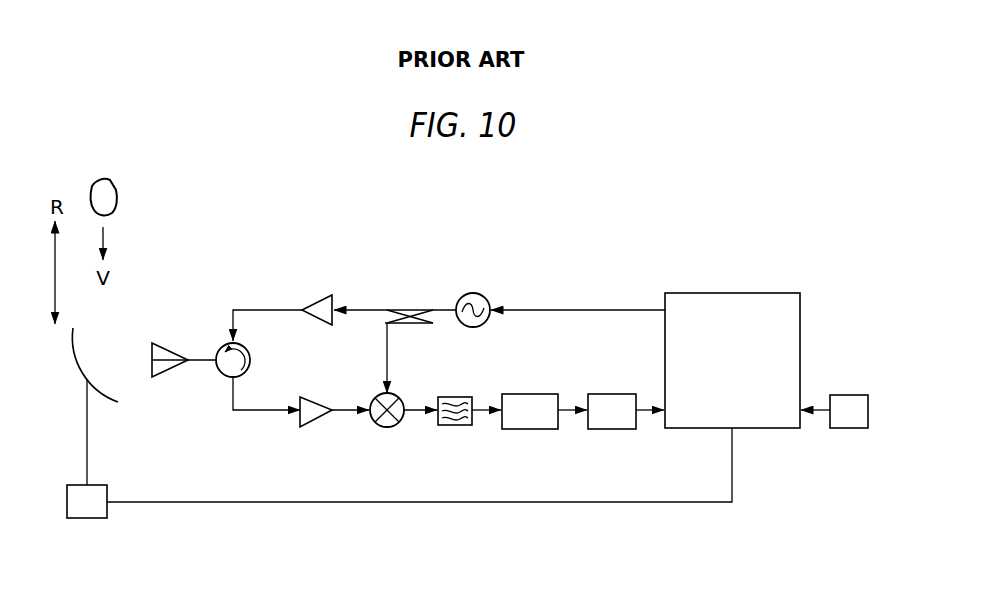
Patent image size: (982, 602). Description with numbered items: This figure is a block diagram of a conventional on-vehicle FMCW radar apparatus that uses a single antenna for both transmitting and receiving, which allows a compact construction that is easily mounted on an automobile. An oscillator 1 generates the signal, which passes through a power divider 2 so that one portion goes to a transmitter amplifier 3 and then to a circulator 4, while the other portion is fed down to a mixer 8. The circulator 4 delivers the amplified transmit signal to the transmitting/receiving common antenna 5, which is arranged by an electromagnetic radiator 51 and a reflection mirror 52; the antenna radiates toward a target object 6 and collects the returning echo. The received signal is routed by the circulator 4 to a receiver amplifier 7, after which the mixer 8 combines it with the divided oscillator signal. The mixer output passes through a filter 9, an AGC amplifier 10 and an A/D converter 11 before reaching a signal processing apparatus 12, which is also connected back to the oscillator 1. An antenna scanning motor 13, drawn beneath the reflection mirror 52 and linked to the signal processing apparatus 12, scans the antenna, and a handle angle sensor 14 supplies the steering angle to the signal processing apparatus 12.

The oscillator 1 is at (470, 292).
The power divider 2 is at (405, 306).
The transmitter amplifier 3 is at (318, 293).
The circulator 4 is at (250, 358).
The transmitting/receiving common antenna 5 is at (144, 345).
The target object 6 is at (117, 196).
The receiver amplifier 7 is at (313, 427).
The mixer 8 is at (387, 428).
The filter 9 is at (453, 425).
The AGC amplifier 10 is at (530, 429).
The A/D converter 11 is at (612, 429).
The signal processing apparatus 12 is at (731, 293).
The antenna scanning motor 13 is at (85, 518).
The handle angle sensor 14 is at (849, 395).
The electromagnetic radiator 51 is at (164, 378).
The reflection mirror 52 is at (76, 335).